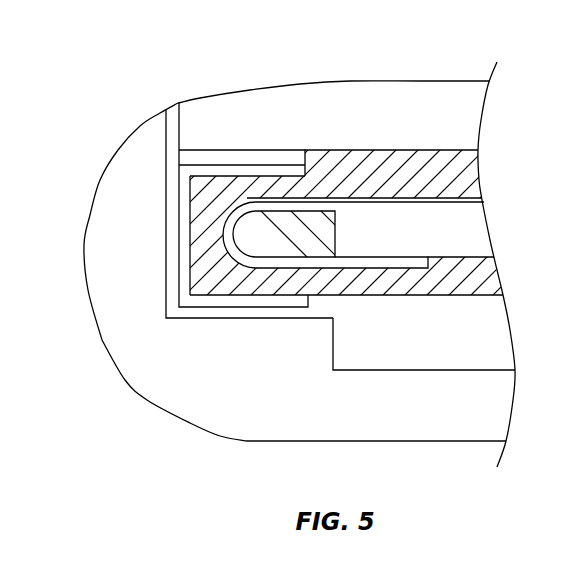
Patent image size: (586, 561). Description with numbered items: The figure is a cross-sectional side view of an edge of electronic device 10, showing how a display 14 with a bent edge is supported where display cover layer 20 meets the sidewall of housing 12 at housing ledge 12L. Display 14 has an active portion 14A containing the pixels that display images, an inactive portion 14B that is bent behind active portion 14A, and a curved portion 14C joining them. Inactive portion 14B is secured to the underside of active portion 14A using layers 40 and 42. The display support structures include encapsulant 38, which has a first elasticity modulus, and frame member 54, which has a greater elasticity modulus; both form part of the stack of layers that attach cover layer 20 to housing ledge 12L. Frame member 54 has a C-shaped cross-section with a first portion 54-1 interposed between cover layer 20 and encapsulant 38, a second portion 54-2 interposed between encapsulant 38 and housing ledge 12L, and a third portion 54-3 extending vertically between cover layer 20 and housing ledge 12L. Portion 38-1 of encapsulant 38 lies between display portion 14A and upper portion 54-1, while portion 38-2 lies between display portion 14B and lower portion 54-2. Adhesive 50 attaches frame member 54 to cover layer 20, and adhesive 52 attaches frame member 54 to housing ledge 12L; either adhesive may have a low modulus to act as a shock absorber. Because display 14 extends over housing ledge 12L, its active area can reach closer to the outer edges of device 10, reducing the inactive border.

The electronic device 10 is at (131, 69).
The housing 12 is at (112, 298).
The housing ledge 12L is at (241, 332).
The display 14 is at (443, 200).
The active portion 14A is at (423, 196).
The inactive portion 14B is at (392, 262).
The curved portion 14C is at (230, 223).
The display cover layer 20 is at (400, 90).
The encapsulant 38 is at (362, 157).
The portion of encapsulant 38-1 is at (268, 182).
The portion of encapsulant 38-2 is at (293, 278).
The layer 40 is at (338, 237).
The layer 42 is at (448, 240).
The adhesive 50 is at (245, 157).
The adhesive 52 is at (193, 310).
The frame member 54 is at (185, 252).
The first portion 54-1 is at (210, 172).
The second portion 54-2 is at (275, 298).
The third portion 54-3 is at (185, 273).